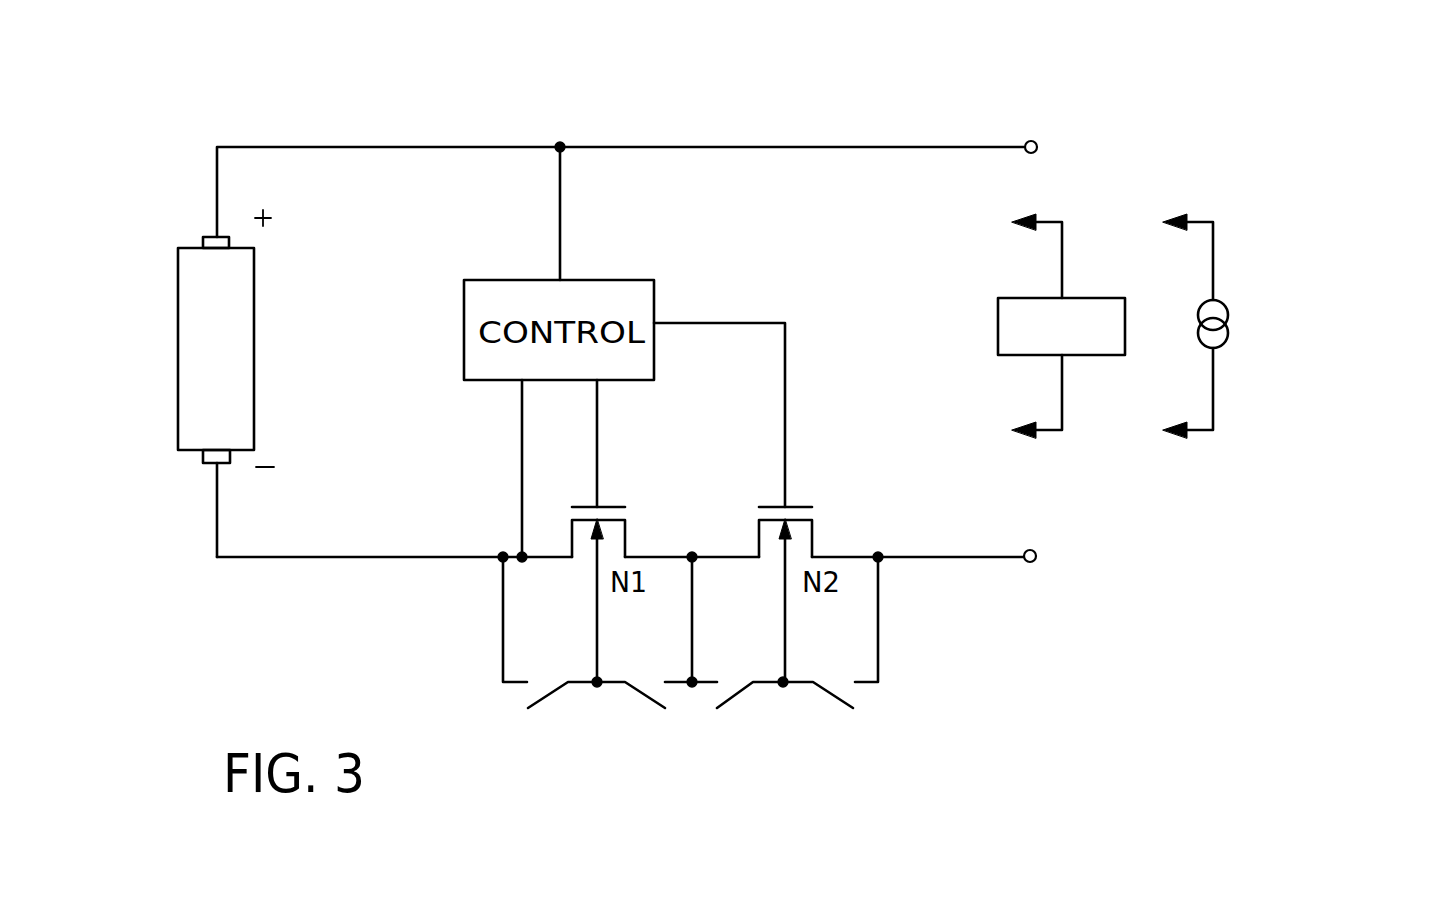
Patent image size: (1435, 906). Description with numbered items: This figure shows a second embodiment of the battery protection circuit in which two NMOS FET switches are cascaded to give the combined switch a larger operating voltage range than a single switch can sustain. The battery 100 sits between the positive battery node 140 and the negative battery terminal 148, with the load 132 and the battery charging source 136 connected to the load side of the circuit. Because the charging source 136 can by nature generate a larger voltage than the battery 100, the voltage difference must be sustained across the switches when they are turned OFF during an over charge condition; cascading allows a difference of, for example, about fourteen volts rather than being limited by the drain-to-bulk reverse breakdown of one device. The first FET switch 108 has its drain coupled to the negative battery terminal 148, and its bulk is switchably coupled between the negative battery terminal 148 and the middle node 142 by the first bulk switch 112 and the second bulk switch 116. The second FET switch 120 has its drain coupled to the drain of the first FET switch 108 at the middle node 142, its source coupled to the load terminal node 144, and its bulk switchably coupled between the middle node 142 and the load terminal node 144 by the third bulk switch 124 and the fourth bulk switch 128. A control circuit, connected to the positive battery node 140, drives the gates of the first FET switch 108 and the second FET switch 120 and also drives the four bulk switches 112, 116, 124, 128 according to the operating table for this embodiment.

The battery 100 is at (235, 418).
The first NMOS FET switch N1 108 is at (604, 506).
The bulk switch SW1 112 is at (548, 697).
The bulk switch SW2 116 is at (657, 707).
The second NMOS FET switch N2 120 is at (791, 506).
The bulk switch SW3 124 is at (733, 697).
The bulk switch SW4 128 is at (843, 703).
The load 132 is at (1017, 347).
The battery charging source 136 is at (1225, 350).
The VBATT node 140 is at (214, 170).
The middle node MID 142 is at (705, 557).
The load terminal node GNDOUT 144 is at (993, 557).
The negative battery terminal GND 148 is at (255, 557).